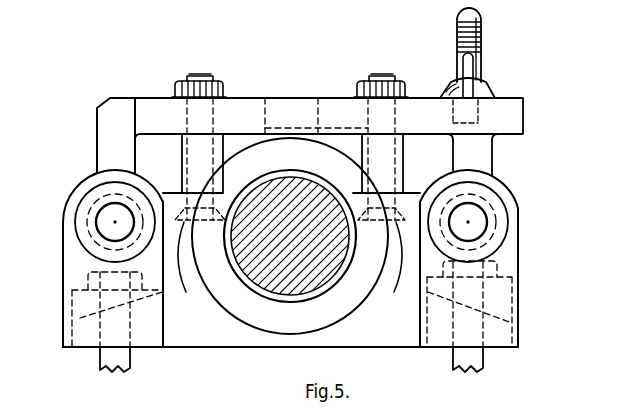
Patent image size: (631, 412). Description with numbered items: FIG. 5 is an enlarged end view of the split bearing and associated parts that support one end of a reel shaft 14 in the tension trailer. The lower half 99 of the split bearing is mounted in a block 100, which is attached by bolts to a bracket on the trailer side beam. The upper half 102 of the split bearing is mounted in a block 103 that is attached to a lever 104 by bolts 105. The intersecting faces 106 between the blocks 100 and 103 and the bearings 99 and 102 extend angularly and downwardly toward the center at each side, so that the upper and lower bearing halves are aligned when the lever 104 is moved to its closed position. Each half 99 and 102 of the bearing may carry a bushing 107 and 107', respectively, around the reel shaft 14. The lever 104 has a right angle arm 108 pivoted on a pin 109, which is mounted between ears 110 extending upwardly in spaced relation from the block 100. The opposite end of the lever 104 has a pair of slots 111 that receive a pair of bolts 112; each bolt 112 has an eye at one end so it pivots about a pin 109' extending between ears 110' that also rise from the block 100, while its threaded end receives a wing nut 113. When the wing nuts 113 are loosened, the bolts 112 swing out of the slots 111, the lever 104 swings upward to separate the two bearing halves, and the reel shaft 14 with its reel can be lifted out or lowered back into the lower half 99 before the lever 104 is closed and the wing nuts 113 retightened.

The reel shaft 14 is at (305, 253).
The lower half of split bearing 99 is at (350, 305).
The block 100 is at (227, 340).
The upper half of split bearing 102 is at (290, 187).
The block 103 is at (408, 197).
The lever 104 is at (243, 100).
The bolts 105 is at (188, 76).
The intersecting faces 106 is at (192, 266).
The bushing 107 is at (290, 236).
The bushing 107' is at (290, 236).
The right angle arm 108 is at (107, 155).
The pin 109 is at (124, 222).
The pin 109' is at (458, 222).
The ears 110 is at (92, 258).
The ears 110' is at (500, 258).
The slots 111 is at (450, 113).
The bolts 112 is at (477, 157).
The wing nut 113 is at (485, 84).